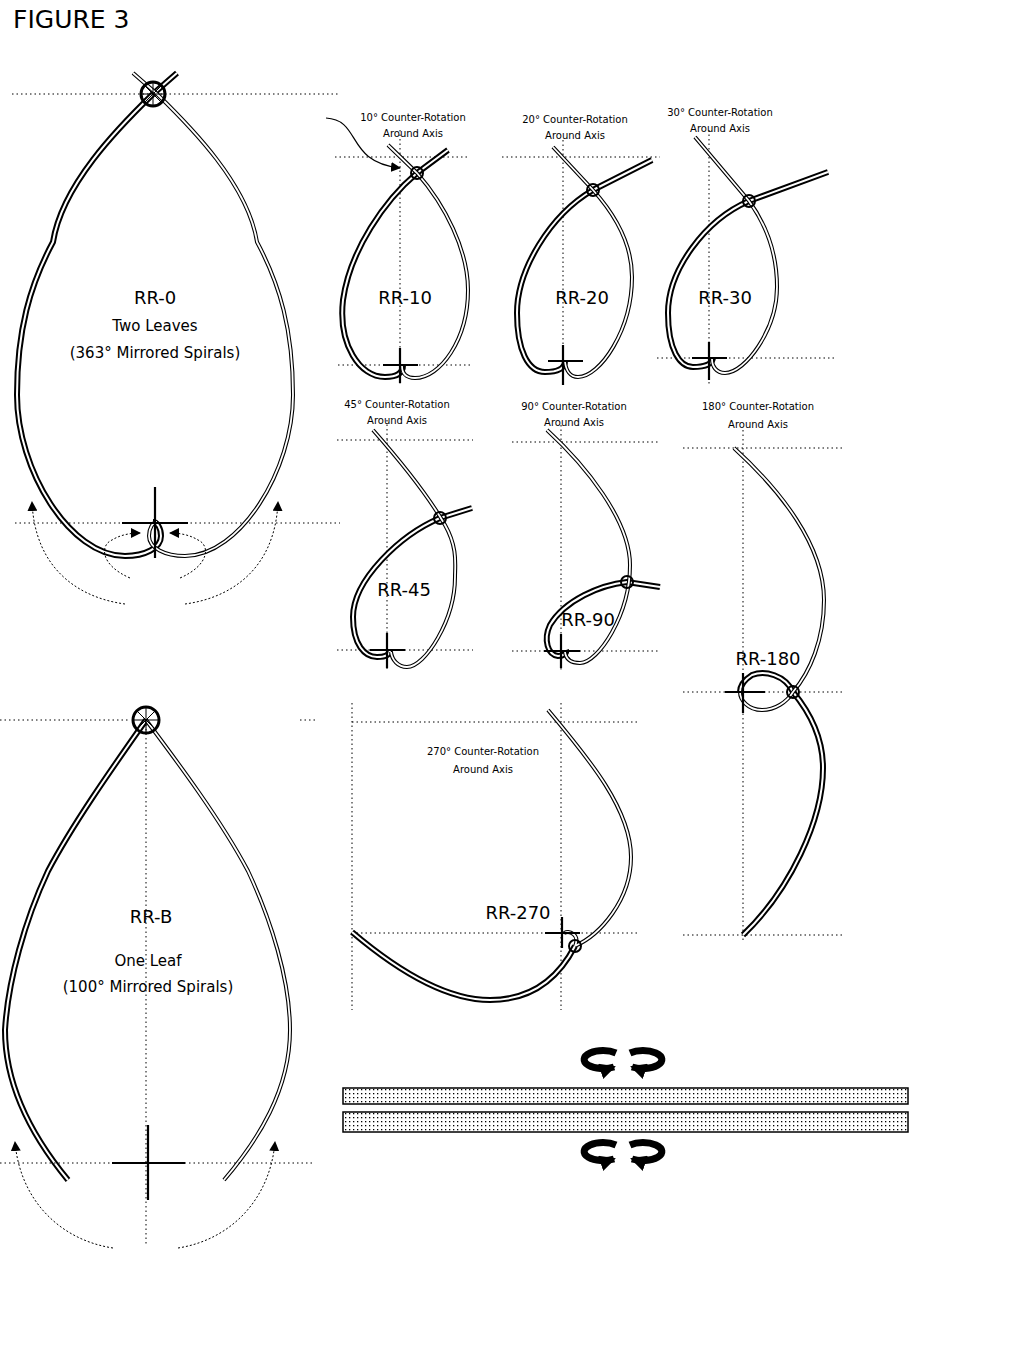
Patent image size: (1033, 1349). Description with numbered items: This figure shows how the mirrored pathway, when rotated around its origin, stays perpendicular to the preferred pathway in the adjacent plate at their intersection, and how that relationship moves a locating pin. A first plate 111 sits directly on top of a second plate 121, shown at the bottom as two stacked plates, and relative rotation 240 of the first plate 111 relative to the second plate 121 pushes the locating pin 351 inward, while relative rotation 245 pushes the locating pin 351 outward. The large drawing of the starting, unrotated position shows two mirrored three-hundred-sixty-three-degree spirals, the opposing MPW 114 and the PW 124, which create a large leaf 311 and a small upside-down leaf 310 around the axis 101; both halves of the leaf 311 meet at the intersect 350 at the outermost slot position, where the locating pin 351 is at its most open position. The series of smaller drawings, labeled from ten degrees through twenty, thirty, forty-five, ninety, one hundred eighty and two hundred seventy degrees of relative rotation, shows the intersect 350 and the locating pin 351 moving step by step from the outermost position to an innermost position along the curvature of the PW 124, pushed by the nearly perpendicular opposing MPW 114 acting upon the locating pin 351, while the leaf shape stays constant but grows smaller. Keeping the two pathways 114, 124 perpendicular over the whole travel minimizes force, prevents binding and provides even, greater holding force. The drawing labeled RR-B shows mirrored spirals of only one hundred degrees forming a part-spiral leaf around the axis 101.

The axis 101 is at (168, 513).
The first plate 111 is at (491, 1088).
The opposing MPW (mirrored pathway) 114 is at (60, 241).
The second plate 121 is at (381, 1135).
The PW (pathway) 124 is at (255, 241).
The relative rotation 240 is at (623, 1105).
The relative rotation 245 is at (623, 1105).
The small upside-down leaf 310 is at (155, 559).
The large leaf 311 is at (146, 879).
The intersect 350 is at (168, 93).
The locating pin 351 is at (163, 720).